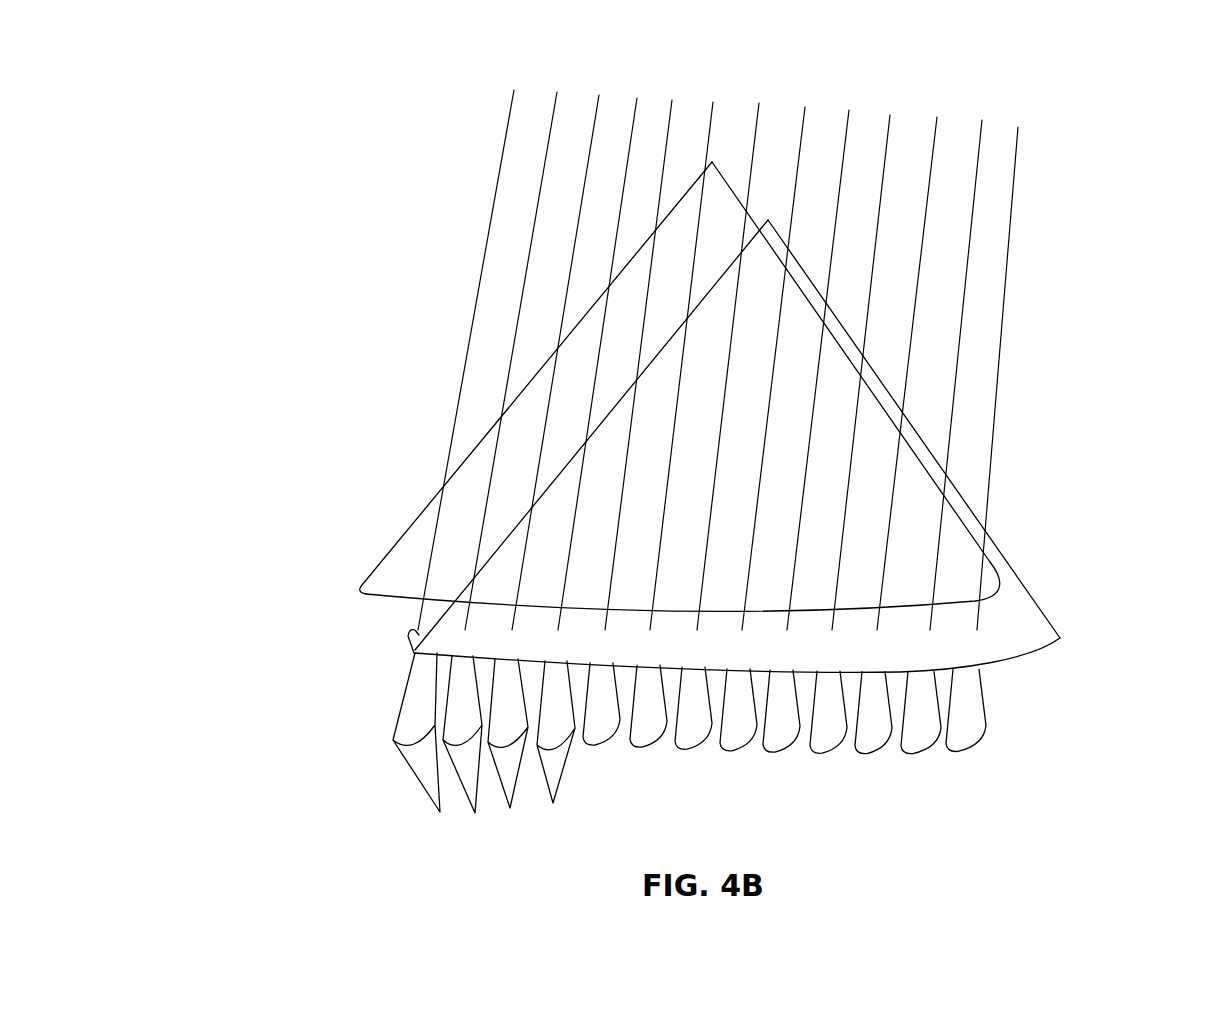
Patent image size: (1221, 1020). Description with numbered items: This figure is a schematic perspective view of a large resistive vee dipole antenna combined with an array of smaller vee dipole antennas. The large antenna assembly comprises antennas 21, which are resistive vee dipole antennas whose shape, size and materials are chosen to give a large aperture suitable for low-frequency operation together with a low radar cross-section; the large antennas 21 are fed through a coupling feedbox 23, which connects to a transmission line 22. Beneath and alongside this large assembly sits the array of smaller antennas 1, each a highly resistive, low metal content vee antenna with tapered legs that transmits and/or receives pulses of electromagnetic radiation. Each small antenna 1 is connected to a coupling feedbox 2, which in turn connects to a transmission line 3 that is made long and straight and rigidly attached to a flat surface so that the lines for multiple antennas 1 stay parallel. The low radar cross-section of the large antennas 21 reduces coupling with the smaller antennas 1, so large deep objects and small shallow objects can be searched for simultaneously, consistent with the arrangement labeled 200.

The incident light beams 200 is at (654, 333).
The transmission line 3 is at (997, 405).
The coupling feedbox 23 is at (768, 220).
The transmission line 22 is at (768, 220).
The antennas 21 is at (432, 627).
The resistive vee antenna 1 is at (484, 744).
The coupling feedbox 2 is at (965, 668).